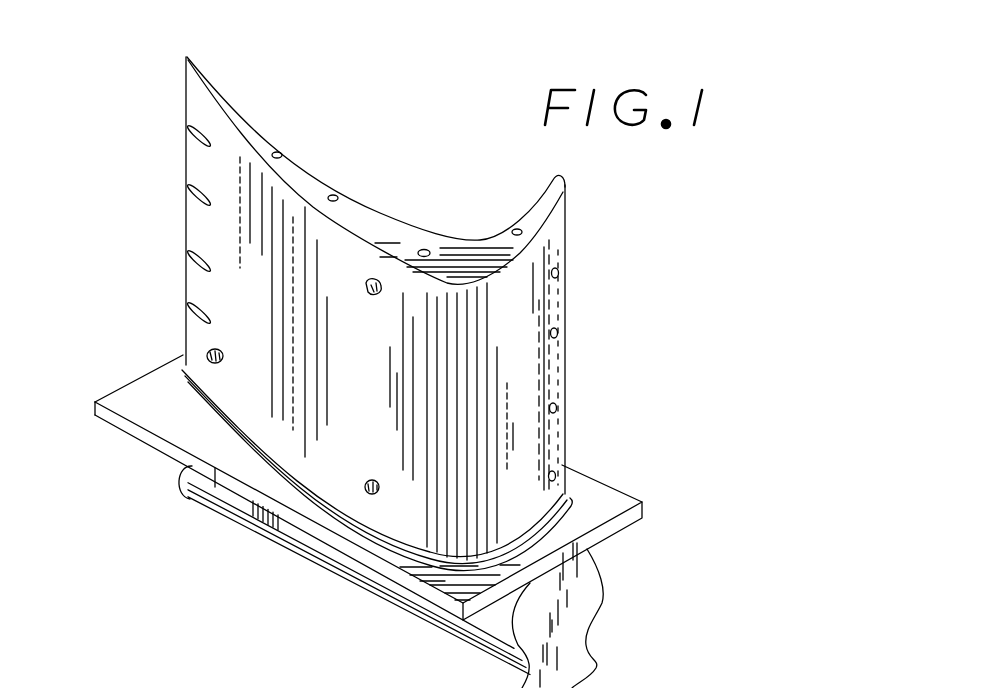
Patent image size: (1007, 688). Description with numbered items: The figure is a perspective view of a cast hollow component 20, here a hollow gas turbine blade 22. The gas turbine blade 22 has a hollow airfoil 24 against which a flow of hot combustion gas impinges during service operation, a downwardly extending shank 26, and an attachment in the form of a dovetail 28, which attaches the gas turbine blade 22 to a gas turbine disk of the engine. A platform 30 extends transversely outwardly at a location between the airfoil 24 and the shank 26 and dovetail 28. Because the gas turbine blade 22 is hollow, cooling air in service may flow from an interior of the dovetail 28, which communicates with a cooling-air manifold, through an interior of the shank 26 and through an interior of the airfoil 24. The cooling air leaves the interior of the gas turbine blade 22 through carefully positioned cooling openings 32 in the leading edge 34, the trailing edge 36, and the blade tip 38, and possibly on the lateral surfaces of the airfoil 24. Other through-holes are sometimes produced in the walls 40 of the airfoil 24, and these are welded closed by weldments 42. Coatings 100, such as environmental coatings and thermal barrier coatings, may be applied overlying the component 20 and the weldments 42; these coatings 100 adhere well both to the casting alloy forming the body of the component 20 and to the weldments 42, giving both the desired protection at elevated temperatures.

The cast hollow component 20 is at (124, 68).
The hollow gas turbine blade 22 is at (182, 65).
The hollow airfoil 24 is at (540, 354).
The shank 26 is at (555, 579).
The dovetail 28 is at (557, 679).
The platform 30 is at (124, 400).
The cooling openings 32 is at (514, 232).
The leading edge 34 is at (546, 440).
The trailing edge 36 is at (190, 222).
The blade tip 38 is at (310, 172).
The walls 40 is at (343, 377).
The weldments 42 is at (207, 352).
The coatings 100 is at (340, 268).